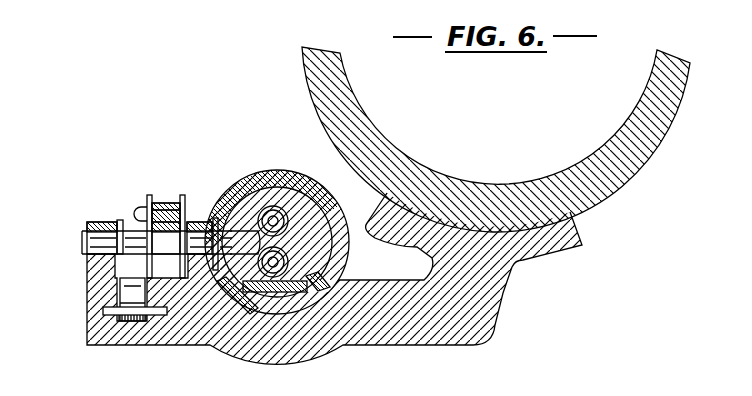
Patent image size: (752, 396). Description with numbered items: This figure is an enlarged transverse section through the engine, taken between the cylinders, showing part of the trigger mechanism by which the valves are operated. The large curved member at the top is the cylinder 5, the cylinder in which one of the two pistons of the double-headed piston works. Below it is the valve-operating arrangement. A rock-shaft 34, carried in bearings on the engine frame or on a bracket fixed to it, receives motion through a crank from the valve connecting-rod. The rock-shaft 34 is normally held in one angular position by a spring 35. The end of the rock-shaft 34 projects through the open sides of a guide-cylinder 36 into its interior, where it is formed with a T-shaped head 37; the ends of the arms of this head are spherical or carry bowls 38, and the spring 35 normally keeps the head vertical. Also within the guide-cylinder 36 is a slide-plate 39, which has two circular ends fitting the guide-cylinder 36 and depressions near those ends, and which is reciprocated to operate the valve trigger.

The cylinder 5 is at (622, 128).
The rock-shaft 34 is at (86, 240).
The spring 35 is at (130, 296).
The guide-cylinder 36 is at (311, 177).
The T-shaped head 37 is at (284, 241).
The bowls 38 is at (277, 212).
The slide-plate 39 is at (248, 312).